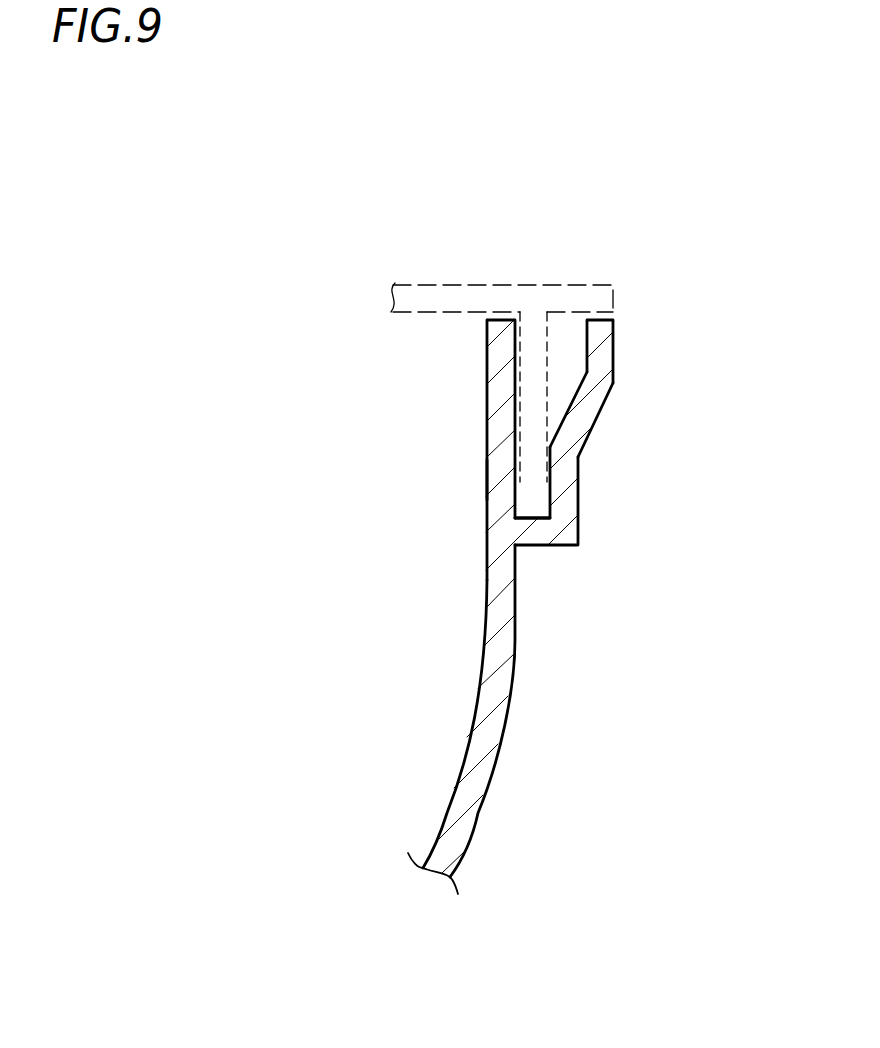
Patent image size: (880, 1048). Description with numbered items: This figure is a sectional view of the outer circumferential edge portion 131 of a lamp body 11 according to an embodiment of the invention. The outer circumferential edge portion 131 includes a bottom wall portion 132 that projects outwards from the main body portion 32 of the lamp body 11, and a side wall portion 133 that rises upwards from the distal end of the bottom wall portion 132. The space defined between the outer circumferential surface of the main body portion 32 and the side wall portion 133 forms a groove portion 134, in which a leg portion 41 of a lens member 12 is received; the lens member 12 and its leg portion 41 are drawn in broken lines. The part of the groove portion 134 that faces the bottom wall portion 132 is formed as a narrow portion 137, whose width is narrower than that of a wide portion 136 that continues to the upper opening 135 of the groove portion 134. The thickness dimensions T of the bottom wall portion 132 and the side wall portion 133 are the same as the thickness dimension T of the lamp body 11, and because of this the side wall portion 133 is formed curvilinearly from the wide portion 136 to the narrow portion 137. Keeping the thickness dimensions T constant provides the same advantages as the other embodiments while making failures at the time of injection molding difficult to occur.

The lamp body 11 is at (473, 690).
The lens member 12 is at (495, 285).
The main body portion 32 is at (493, 482).
The leg portion 41 is at (526, 351).
The outer circumferential edge portion 131 is at (485, 450).
The bottom wall portion 132 is at (542, 537).
The side wall portion 133 is at (603, 405).
The groove portion 134 is at (560, 368).
The upper opening 135 is at (577, 330).
The wide portion 136 is at (580, 357).
The narrow portion 137 is at (548, 485).
The thickness dimension T is at (537, 382).